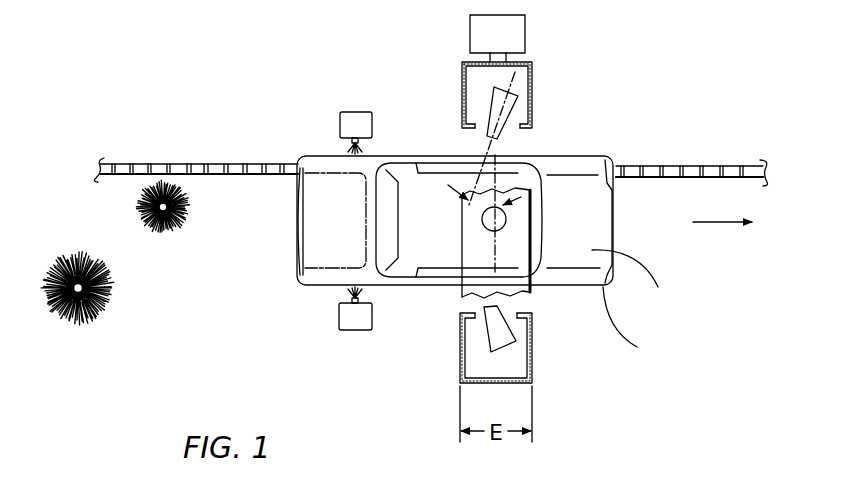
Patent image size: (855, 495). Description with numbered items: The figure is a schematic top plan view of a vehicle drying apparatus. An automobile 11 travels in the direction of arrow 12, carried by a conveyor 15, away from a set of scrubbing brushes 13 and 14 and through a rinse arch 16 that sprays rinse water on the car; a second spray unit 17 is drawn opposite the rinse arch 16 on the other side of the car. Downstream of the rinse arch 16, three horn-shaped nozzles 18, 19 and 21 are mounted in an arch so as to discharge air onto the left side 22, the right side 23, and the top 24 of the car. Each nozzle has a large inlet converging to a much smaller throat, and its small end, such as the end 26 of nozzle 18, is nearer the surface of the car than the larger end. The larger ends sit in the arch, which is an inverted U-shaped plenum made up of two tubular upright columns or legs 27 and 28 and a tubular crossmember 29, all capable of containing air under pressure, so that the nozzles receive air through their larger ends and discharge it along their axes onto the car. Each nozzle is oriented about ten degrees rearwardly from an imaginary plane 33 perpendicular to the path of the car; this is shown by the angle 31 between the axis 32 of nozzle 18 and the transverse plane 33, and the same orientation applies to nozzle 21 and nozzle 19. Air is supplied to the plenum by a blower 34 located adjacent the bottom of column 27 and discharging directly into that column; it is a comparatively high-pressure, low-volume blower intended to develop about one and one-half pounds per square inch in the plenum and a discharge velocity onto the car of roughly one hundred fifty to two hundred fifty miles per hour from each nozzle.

The automobile 11 is at (640, 155).
The arrow 12 is at (710, 222).
The scrubbing brush 13 is at (137, 208).
The scrubbing brush 14 is at (106, 299).
The conveyor 15 is at (127, 163).
The rinse arch 16 is at (350, 120).
The spray unit 17 is at (347, 320).
The nozzle 18 is at (492, 105).
The nozzle 19 is at (488, 333).
The nozzle 21 is at (482, 227).
The left side 22 is at (587, 157).
The right side 23 is at (633, 324).
The top 24 is at (639, 277).
The small end 26 is at (490, 130).
The column 27 is at (534, 78).
The column 28 is at (532, 368).
The crossmember 29 is at (480, 283).
The angle 31 is at (483, 200).
The axis 32 is at (515, 80).
The imaginary plane 33 is at (495, 258).
The blower 34 is at (511, 33).